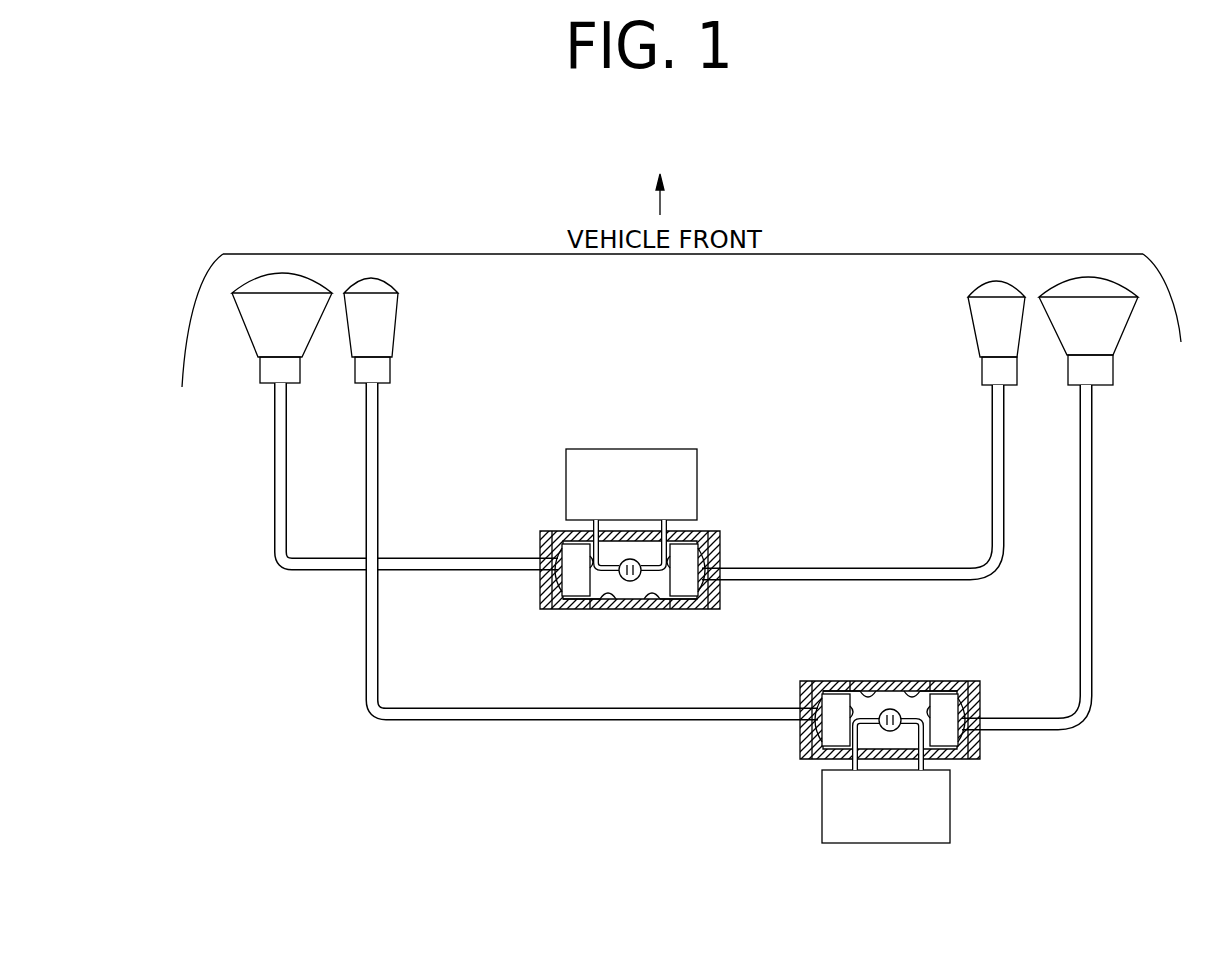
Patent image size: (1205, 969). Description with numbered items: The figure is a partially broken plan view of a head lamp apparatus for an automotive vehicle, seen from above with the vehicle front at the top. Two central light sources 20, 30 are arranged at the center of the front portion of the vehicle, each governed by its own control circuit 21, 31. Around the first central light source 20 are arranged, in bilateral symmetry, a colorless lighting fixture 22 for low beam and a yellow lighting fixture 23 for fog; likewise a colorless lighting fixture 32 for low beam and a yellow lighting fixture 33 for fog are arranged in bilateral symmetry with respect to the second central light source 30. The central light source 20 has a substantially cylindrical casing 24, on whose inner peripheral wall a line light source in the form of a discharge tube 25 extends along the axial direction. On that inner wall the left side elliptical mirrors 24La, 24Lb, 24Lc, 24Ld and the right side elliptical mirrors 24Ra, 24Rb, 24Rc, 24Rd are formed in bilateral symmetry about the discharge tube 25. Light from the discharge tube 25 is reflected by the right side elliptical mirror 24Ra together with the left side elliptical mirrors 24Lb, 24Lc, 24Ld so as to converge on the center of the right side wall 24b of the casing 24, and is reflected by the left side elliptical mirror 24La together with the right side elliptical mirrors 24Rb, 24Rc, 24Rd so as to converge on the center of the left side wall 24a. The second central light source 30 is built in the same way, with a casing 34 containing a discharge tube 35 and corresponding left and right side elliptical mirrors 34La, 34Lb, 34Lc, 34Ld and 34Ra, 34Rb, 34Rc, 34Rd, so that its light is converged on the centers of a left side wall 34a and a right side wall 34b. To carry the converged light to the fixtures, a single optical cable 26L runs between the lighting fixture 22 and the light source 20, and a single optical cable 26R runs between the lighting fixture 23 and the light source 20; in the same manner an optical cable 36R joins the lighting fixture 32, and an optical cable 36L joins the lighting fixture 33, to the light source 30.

The central light source 20 is at (552, 649).
The control circuit 21 is at (589, 449).
The lighting fixture for low beam 22 is at (257, 336).
The lighting fixture for fog 23 is at (978, 336).
The casing 24 is at (656, 565).
The left side wall 24a is at (542, 546).
The right side wall 24b is at (718, 553).
The left side elliptical mirror 24La is at (572, 524).
The left side elliptical mirror 24Lb is at (592, 613).
The left side elliptical mirror 24Lc is at (577, 613).
The left side elliptical mirror 24Ld is at (540, 566).
The right side elliptical mirror 24Ra is at (697, 531).
The right side elliptical mirror 24Rb is at (666, 614).
The right side elliptical mirror 24Rc is at (680, 612).
The right side elliptical mirror 24Rd is at (718, 592).
The discharge tube 25 is at (631, 605).
The optical cable 26L is at (273, 462).
The optical cable 26R is at (992, 443).
The central light source 30 is at (968, 672).
The control circuit 31 is at (935, 843).
The lighting fixture for low beam 32 is at (1113, 338).
The lighting fixture for fog 33 is at (393, 336).
The casing 34 is at (897, 707).
The left side wall 34a is at (806, 745).
The right side wall 34b is at (975, 742).
The left side elliptical mirror 34La is at (830, 759).
The left side elliptical mirror 34Lb is at (862, 704).
The left side elliptical mirror 34Lc is at (820, 683).
The left side elliptical mirror 34Ld is at (822, 712).
The right side elliptical mirror 34Ra is at (950, 759).
The right side elliptical mirror 34Rb is at (926, 704).
The right side elliptical mirror 34Rc is at (960, 686).
The right side elliptical mirror 34Rd is at (965, 706).
The discharge tube 35 is at (890, 708).
The optical cable 36L is at (365, 462).
The optical cable 36R is at (1082, 443).